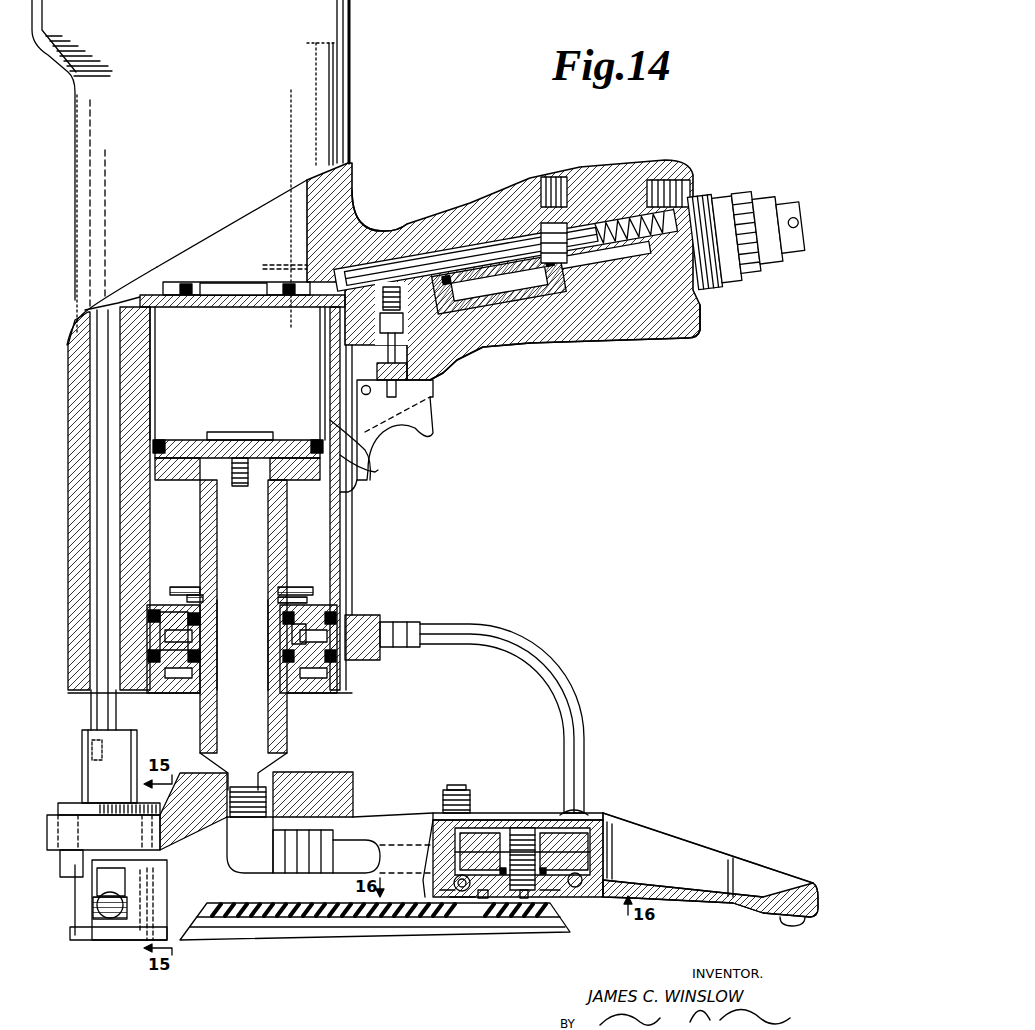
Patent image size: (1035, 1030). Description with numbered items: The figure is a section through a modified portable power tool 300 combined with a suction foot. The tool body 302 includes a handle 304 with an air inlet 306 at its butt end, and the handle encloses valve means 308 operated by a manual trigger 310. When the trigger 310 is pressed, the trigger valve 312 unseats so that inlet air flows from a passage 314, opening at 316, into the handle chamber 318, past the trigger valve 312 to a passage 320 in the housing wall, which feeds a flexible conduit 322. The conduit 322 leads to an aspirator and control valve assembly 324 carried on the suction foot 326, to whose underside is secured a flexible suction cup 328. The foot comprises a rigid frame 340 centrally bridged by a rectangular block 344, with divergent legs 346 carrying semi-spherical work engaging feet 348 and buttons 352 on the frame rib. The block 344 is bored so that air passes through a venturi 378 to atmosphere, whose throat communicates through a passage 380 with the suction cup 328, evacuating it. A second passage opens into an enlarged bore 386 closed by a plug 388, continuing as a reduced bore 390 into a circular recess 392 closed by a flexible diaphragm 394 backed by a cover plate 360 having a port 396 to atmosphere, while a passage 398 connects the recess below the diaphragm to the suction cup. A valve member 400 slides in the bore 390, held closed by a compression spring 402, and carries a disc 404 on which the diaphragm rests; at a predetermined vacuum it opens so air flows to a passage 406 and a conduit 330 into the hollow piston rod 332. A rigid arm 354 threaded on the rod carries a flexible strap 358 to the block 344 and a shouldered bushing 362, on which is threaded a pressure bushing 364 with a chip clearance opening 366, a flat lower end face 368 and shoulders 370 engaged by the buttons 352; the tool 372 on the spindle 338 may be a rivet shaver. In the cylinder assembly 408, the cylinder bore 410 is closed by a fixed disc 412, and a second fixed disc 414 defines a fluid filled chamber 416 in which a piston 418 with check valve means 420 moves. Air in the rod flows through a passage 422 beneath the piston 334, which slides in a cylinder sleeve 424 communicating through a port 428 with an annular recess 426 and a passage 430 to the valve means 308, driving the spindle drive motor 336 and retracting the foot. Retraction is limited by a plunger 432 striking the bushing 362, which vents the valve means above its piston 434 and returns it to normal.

The tool 300 is at (352, 123).
The tool body 302 is at (358, 33).
The handle 304 is at (497, 187).
The air inlet 306 is at (743, 205).
The valve means 308 is at (520, 327).
The manual trigger 310 is at (437, 418).
The trigger valve 312 is at (330, 325).
The passage 314 is at (620, 185).
The opening 316 is at (690, 170).
The handle chamber 318 is at (638, 322).
The passage 320 is at (345, 516).
The flexible conduit 322 is at (568, 675).
The aspirator and control valve assembly 324 is at (510, 810).
The suction foot 326 is at (673, 841).
The flexible suction cup 328 is at (570, 930).
The conduit 330 is at (353, 843).
The hollow piston rod 332 is at (288, 734).
The piston 334 is at (283, 435).
The spindle drive motor 336 is at (353, 196).
The tool spindle 338 is at (97, 712).
The rigid frame 340 is at (407, 836).
The rectangular block 344 is at (593, 833).
The divergent legs 346 is at (710, 867).
The work engaging feet 348 is at (790, 927).
The buttons 352 is at (88, 880).
The rigid arm 354 is at (300, 772).
The flexible strap 358 is at (395, 815).
The cover plate 360 is at (597, 830).
The shouldered bushing 362 is at (70, 803).
The pressure bushing 364 is at (150, 940).
The chip clearance opening 366 is at (72, 930).
The lower end face 368 is at (102, 945).
The shoulders 370 is at (95, 908).
The tool 372 is at (137, 746).
The venturi 378 is at (453, 910).
The passage 380 is at (463, 907).
The enlarged bore 386 is at (483, 903).
The plug 388 is at (507, 903).
The reduced bore 390 is at (550, 820).
The circular recess 392 is at (438, 862).
The flexible diaphragm 394 is at (488, 813).
The port 396 is at (527, 813).
The passage 398 is at (477, 923).
The valve member 400 is at (540, 860).
The compression spring 402 is at (523, 907).
The disc 404 is at (570, 807).
The passage 406 is at (423, 910).
The cylinder assembly 408 is at (322, 553).
The cylinder bore 410 is at (335, 573).
The fixed disc 412 is at (303, 689).
The second fixed disc 414 is at (347, 501).
The chamber 416 is at (322, 539).
The piston 418 is at (336, 604).
The check valve means 420 is at (332, 591).
The passage 422 is at (248, 486).
The cylinder sleeve 424 is at (373, 448).
The annular recess 426 is at (335, 450).
The port 428 is at (335, 472).
The passage 430 is at (455, 382).
The plunger 432 is at (87, 723).
The piston 434 is at (487, 243).